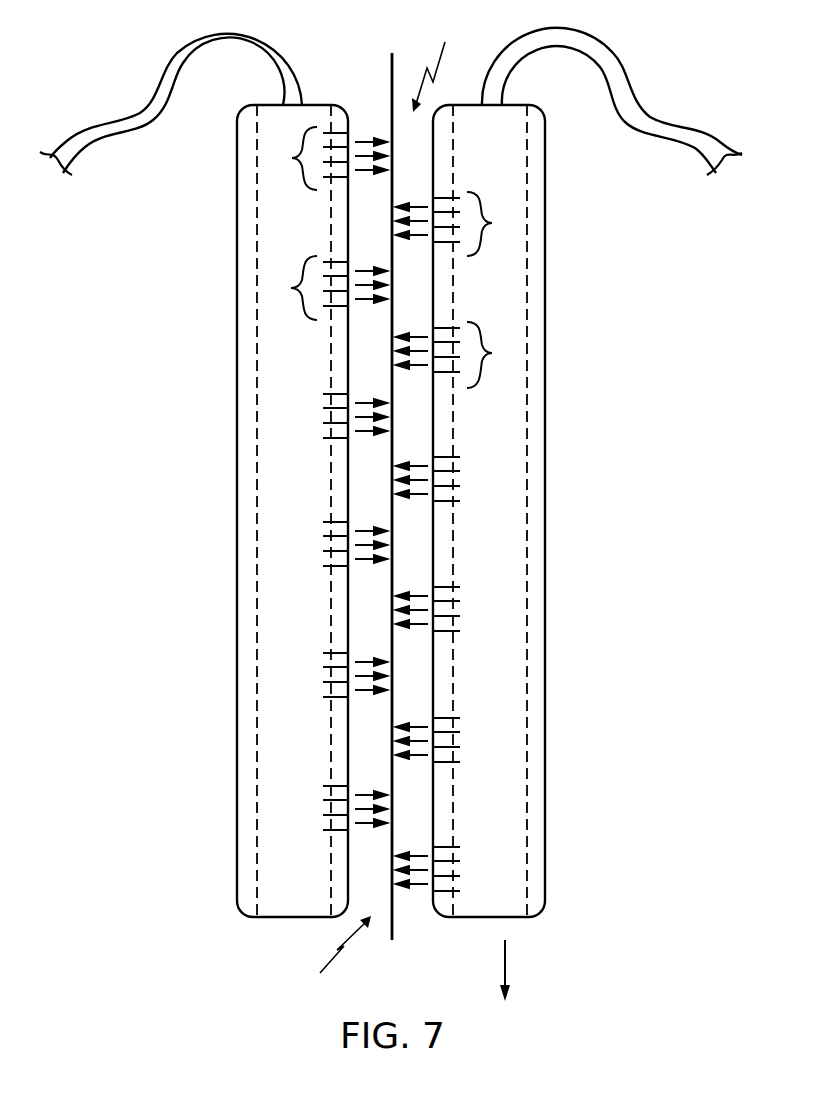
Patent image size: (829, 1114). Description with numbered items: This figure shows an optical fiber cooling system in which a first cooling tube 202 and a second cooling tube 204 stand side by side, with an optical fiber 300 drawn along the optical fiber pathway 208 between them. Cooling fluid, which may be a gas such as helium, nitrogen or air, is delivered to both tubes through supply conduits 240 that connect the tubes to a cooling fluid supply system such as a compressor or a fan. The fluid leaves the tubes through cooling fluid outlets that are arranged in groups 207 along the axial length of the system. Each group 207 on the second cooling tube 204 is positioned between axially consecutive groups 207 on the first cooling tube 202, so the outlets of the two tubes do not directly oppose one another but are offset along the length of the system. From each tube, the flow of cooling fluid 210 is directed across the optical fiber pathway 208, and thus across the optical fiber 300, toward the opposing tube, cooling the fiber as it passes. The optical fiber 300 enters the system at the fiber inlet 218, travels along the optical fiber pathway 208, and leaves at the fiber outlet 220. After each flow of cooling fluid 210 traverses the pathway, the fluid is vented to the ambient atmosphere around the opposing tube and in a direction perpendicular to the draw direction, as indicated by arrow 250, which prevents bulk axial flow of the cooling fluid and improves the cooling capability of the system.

The first cooling tube 202 is at (237, 602).
The second cooling tube 204 is at (545, 601).
The group of cooling fluid outlets 207 is at (292, 158).
The optical fiber pathway 208 is at (372, 864).
The flow of cooling fluid 210 is at (355, 142).
The fiber inlet 218 is at (446, 63).
The fiber outlet 220 is at (334, 958).
The supply conduit 240 is at (160, 76).
The arrow indicating venting direction 250 is at (505, 965).
The optical fiber 300 is at (392, 925).